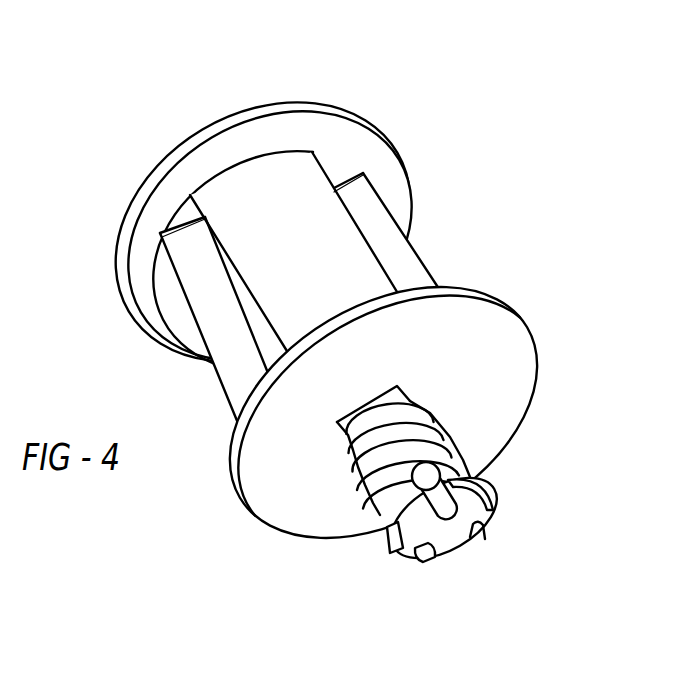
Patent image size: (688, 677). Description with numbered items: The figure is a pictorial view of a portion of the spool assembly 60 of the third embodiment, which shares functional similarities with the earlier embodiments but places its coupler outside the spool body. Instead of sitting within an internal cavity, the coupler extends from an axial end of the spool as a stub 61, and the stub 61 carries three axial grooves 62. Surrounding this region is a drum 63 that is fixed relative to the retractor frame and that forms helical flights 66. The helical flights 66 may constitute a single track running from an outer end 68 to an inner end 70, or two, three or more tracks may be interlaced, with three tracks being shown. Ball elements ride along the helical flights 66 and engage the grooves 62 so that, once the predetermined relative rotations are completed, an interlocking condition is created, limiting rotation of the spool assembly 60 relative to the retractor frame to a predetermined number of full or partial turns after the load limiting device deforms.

The spool assembly 60 is at (275, 102).
The stub 61 is at (447, 548).
The axial grooves 62 is at (470, 474).
The drum 63 is at (390, 538).
The helical flights 66 is at (433, 423).
The outer end 68 is at (458, 545).
The inner end 70 is at (410, 415).